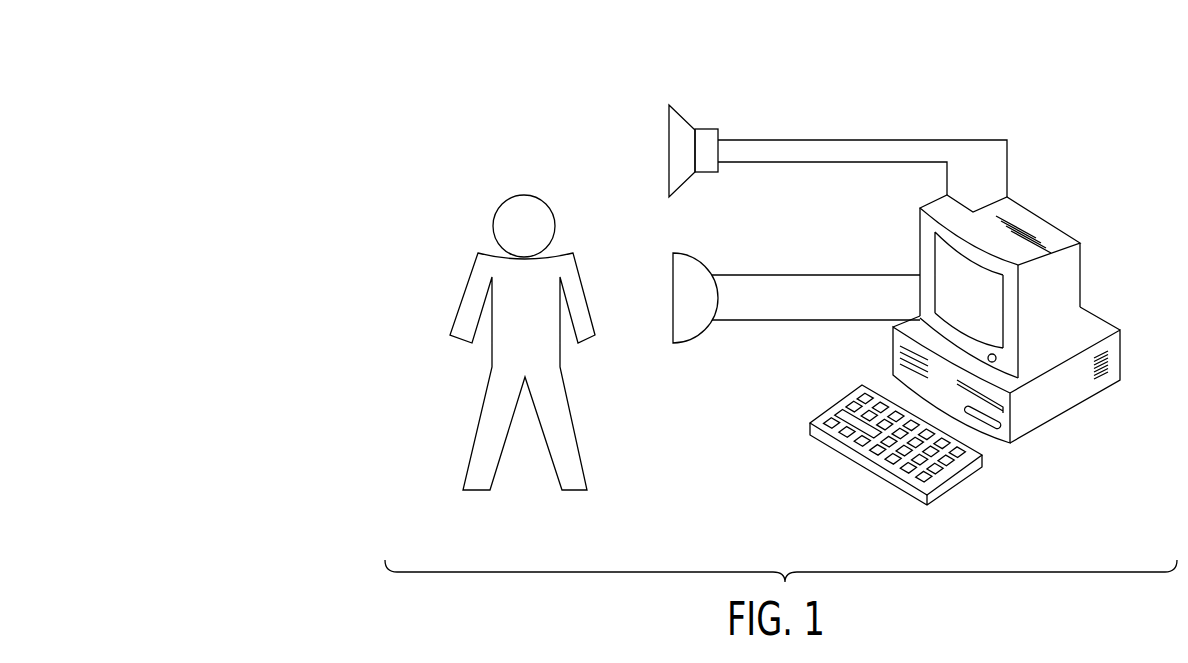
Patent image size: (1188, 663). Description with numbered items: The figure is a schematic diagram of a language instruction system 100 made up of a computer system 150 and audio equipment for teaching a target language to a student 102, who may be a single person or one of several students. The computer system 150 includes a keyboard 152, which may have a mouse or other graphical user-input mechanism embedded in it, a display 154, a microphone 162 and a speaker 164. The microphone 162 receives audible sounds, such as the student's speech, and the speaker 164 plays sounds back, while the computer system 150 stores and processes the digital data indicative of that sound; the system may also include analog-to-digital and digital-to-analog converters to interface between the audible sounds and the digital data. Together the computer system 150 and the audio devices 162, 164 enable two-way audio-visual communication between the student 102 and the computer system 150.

The language instruction system 100 is at (892, 84).
The student 102 is at (468, 278).
The computer system 150 is at (1052, 223).
The keyboard 152 is at (857, 467).
The display 154 is at (1060, 327).
The microphone 162 is at (765, 275).
The speaker 164 is at (765, 140).